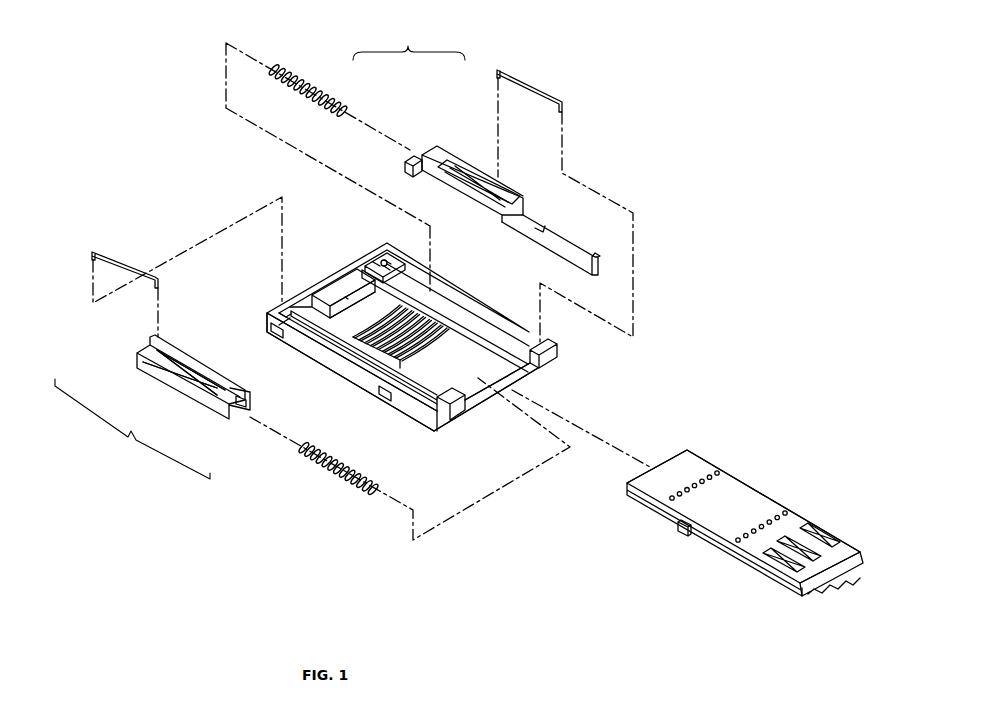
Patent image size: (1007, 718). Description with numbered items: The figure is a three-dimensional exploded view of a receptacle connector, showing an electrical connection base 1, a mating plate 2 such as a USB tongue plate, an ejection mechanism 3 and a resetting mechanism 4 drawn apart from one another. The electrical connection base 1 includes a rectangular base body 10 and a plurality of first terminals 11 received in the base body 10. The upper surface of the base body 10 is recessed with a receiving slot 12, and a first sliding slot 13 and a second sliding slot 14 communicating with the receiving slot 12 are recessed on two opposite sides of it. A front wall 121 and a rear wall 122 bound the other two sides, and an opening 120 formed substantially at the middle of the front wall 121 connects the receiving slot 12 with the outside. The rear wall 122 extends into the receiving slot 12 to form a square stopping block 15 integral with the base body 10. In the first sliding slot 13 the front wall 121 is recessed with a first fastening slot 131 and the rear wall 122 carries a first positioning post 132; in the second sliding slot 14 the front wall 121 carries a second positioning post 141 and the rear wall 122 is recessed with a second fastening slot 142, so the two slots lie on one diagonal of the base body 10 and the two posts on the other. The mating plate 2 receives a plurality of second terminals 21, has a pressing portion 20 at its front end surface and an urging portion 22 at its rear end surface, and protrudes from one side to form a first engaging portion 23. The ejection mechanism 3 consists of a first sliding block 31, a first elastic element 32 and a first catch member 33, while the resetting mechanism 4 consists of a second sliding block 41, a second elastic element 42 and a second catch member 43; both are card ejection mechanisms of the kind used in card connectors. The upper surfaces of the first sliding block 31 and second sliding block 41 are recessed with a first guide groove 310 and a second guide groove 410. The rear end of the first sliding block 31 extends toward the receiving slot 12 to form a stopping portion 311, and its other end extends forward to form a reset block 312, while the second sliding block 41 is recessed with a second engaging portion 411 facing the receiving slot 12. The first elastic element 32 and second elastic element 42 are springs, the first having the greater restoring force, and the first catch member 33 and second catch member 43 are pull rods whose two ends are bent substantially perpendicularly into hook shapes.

The electrical connection base 1 is at (558, 348).
The mating plate 2 is at (759, 484).
The ejection mechanism 3 is at (409, 44).
The resetting mechanism 4 is at (132, 429).
The base body 10 is at (373, 377).
The first terminals 11 is at (430, 313).
The receiving slot 12 is at (367, 310).
The first sliding slot 13 is at (453, 317).
The second sliding slot 14 is at (353, 347).
The stopping block 15 is at (333, 290).
The pressing portion 20 is at (828, 568).
The second terminals 21 is at (817, 532).
The urging portion 22 is at (668, 459).
The first engaging portion 23 is at (680, 529).
The first sliding block 31 is at (431, 150).
The first elastic element 32 is at (335, 100).
The first catch member 33 is at (497, 80).
The second sliding block 41 is at (197, 395).
The second elastic element 42 is at (300, 448).
The second catch member 43 is at (153, 280).
The opening 120 is at (528, 383).
The front wall 121 is at (446, 400).
The rear wall 122 is at (375, 262).
The first fastening slot 131 is at (538, 343).
The first positioning post 132 is at (390, 264).
The second positioning post 141 is at (424, 398).
The second fastening slot 142 is at (286, 315).
The first guide groove 310 is at (465, 167).
The stopping portion 311 is at (405, 170).
The reset block 312 is at (568, 244).
The second guide groove 410 is at (197, 363).
The second engaging portion 411 is at (240, 386).